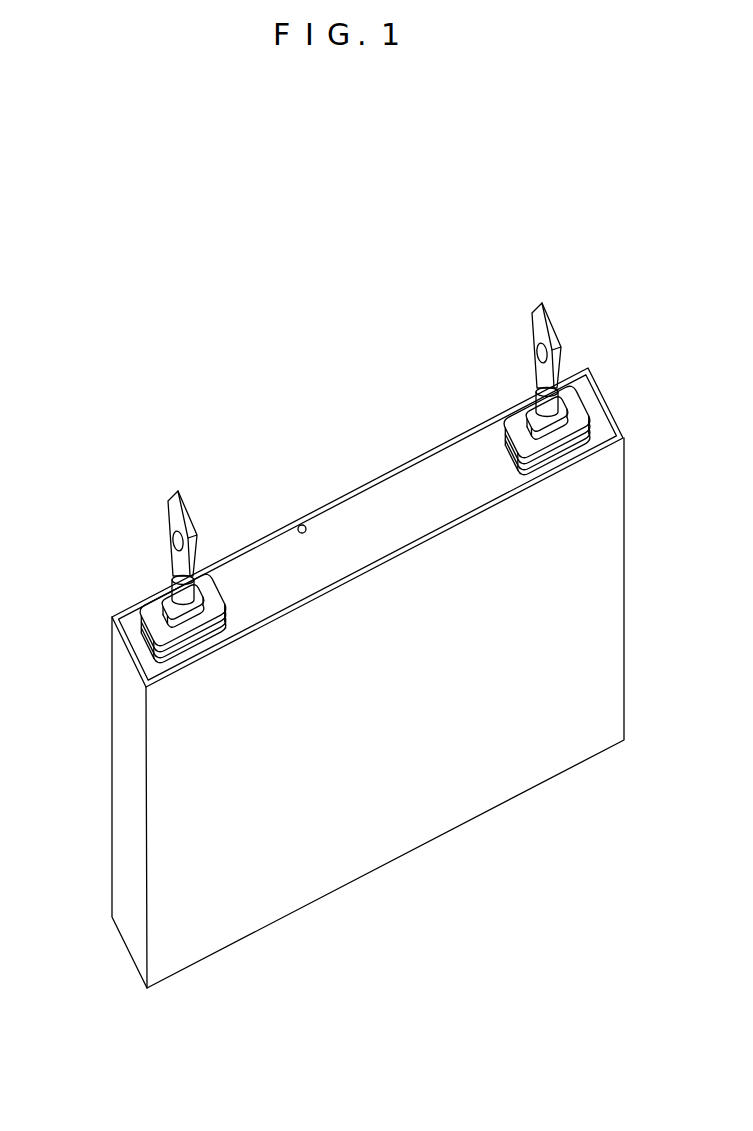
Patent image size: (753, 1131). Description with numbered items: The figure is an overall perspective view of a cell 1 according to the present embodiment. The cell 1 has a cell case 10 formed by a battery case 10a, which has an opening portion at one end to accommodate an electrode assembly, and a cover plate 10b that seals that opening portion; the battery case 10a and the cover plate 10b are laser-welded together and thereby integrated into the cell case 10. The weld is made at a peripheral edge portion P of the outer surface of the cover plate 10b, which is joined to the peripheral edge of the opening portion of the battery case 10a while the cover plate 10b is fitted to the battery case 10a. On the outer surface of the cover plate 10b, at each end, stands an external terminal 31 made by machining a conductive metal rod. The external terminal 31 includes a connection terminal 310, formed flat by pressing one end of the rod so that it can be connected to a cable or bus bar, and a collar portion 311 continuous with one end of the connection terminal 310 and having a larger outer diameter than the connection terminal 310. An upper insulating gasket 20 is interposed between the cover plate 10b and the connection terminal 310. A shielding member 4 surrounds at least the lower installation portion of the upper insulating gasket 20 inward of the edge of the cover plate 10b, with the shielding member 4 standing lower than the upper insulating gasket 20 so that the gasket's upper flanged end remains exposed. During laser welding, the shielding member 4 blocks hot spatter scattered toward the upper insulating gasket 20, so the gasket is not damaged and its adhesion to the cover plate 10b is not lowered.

The cell 1 is at (475, 225).
The cell case 10 is at (593, 792).
The battery case 10a is at (360, 768).
The cover plate 10b is at (358, 542).
The peripheral edge portion P is at (300, 524).
The external terminal 31 is at (153, 545).
The connection terminal 310 is at (174, 558).
The collar portion 311 is at (150, 608).
The upper insulating gasket 20 is at (190, 623).
The shielding member 4 is at (152, 640).